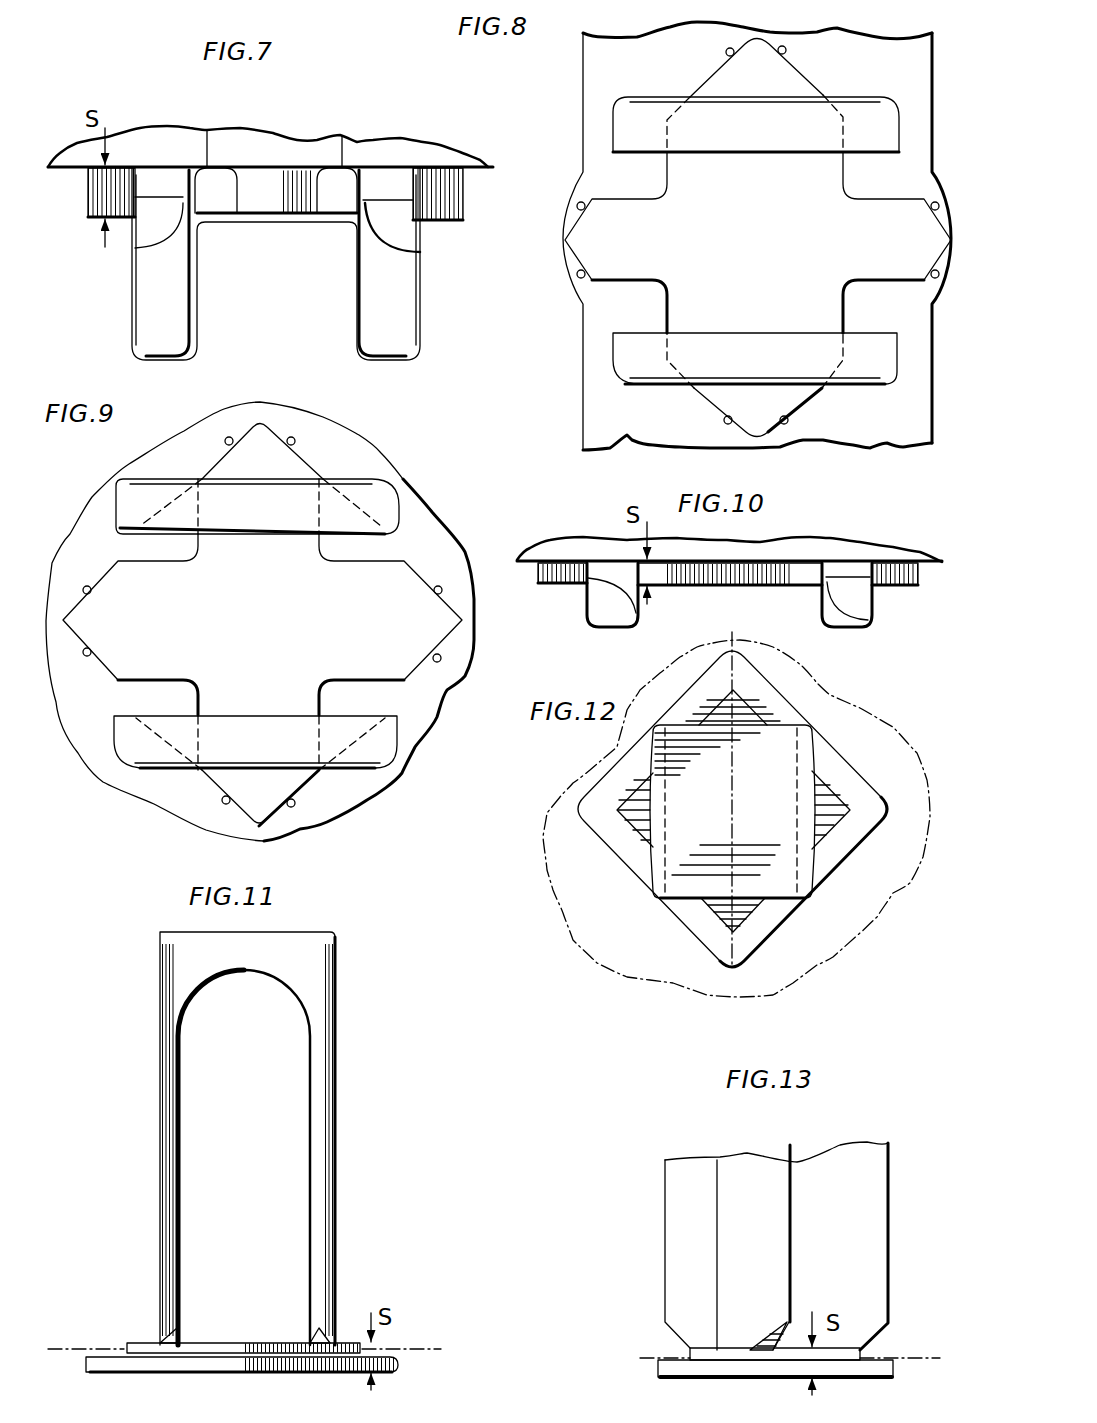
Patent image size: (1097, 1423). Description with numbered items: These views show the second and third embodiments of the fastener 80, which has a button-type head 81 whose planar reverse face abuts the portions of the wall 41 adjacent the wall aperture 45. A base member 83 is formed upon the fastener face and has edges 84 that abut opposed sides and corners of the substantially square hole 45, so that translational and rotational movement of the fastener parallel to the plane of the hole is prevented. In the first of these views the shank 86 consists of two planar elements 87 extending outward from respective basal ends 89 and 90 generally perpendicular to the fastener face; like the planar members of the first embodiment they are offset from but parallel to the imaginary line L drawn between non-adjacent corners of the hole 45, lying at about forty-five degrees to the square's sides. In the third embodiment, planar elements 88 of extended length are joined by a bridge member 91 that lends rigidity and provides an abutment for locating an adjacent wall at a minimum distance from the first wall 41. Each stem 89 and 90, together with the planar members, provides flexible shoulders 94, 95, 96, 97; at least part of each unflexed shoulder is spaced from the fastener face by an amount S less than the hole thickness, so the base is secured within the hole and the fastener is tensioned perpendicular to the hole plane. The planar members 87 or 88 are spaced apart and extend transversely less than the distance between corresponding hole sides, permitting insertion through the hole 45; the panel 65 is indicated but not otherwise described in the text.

In FIG. 11, the wall 41 is at (417, 1347).
In FIG. 13, the wall 41 is at (588, 1355).
In FIG. 12, the wall aperture 45 is at (637, 837).
In FIG. 9, the panel 65 is at (348, 470).
In FIG. 10, the fastener 80 is at (835, 543).
In FIG. 11, the fastener 80 is at (402, 1370).
In FIG. 13, the fastener 80 is at (780, 1385).
In FIG. 7, the fastener head 81 is at (430, 166).
In FIG. 8, the fastener head 81 is at (621, 296).
In FIG. 9, the fastener head 81 is at (399, 538).
In FIG. 10, the fastener head 81 is at (553, 560).
In FIG. 11, the fastener head 81 is at (96, 1347).
In FIG. 13, the fastener head 81 is at (882, 1360).
In FIG. 8, the base member 83 is at (742, 208).
In FIG. 9, the base member 83 is at (254, 613).
In FIG. 10, the base member 83 is at (757, 565).
In FIG. 11, the base member 83 is at (240, 1343).
In FIG. 13, the base member 83 is at (775, 1354).
In FIG. 8, the edges 84 is at (783, 52).
In FIG. 9, the edges 84 is at (286, 442).
In FIG. 7, the shank 86 is at (335, 335).
In FIG. 11, the shank 86 is at (344, 1040).
In FIG. 7, the planar elements 87 is at (147, 318).
In FIG. 8, the planar elements 87 is at (630, 117).
In FIG. 9, the planar elements 87 is at (396, 505).
In FIG. 11, the planar elements of extended length 88 is at (313, 1093).
In FIG. 12, the planar elements of extended length 88 is at (648, 807).
In FIG. 13, the planar elements of extended length 88 is at (802, 1172).
In FIG. 7, the basal end 89 is at (373, 193).
In FIG. 8, the basal end 89 is at (806, 123).
In FIG. 9, the basal end 89 is at (290, 501).
In FIG. 11, the basal end 89 is at (334, 1339).
In FIG. 7, the basal end 90 is at (183, 200).
In FIG. 8, the basal end 90 is at (786, 400).
In FIG. 9, the basal end 90 is at (312, 768).
In FIG. 11, the basal end 90 is at (157, 1342).
In FIG. 13, the basal end 90 is at (720, 1348).
In FIG. 11, the bridge member 91 is at (298, 932).
In FIG. 12, the bridge member 91 is at (750, 772).
In FIG. 7, the flexible shoulder 94 is at (157, 222).
In FIG. 8, the flexible shoulder 94 is at (674, 121).
In FIG. 9, the flexible shoulder 94 is at (130, 488).
In FIG. 10, the flexible shoulder 94 is at (605, 595).
In FIG. 11, the flexible shoulder 94 is at (179, 1340).
In FIG. 13, the flexible shoulder 94 is at (764, 1347).
In FIG. 8, the flexible shoulder 95 is at (836, 114).
In FIG. 13, the flexible shoulder 95 is at (667, 1330).
In FIG. 7, the flexible shoulder 96 is at (393, 216).
In FIG. 8, the flexible shoulder 96 is at (679, 366).
In FIG. 9, the flexible shoulder 96 is at (118, 746).
In FIG. 10, the flexible shoulder 96 is at (850, 592).
In FIG. 11, the flexible shoulder 96 is at (310, 1337).
In FIG. 13, the flexible shoulder 96 is at (888, 1326).
In FIG. 8, the flexible shoulder 97 is at (851, 366).
In FIG. 9, the flexible shoulder 97 is at (390, 762).